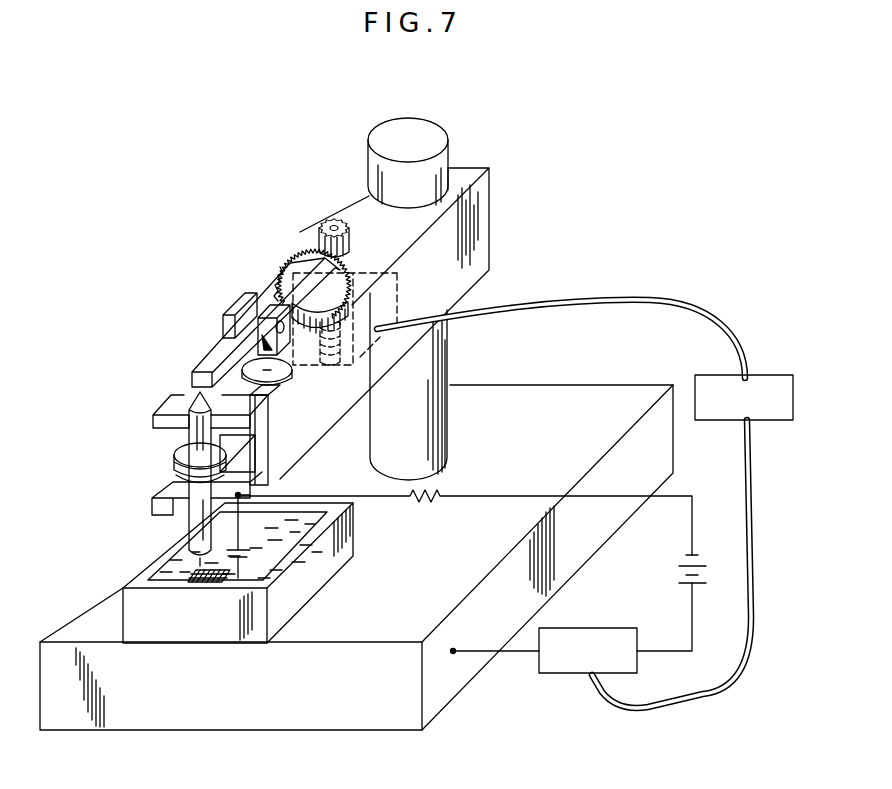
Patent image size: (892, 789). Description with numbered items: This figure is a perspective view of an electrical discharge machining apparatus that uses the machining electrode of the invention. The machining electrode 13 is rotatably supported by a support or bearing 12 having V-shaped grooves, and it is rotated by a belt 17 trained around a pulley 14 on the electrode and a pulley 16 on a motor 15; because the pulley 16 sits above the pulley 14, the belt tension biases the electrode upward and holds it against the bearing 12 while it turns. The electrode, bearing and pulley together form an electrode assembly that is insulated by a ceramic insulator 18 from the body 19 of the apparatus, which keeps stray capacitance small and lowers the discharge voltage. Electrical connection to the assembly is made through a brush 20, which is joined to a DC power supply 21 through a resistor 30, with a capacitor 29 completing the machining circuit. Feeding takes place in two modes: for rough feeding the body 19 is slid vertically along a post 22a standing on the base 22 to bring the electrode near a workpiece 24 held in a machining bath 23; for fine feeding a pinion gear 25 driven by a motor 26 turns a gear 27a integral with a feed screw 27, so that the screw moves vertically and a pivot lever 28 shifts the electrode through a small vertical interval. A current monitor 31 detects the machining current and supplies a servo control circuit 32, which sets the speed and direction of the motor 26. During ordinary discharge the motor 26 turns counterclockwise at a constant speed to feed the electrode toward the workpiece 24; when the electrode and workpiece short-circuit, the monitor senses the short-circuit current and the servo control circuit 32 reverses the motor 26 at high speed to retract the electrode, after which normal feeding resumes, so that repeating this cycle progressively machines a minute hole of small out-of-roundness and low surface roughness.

The bearing 12 is at (153, 420).
The machining electrode 13 is at (198, 444).
The pulley 14 is at (180, 462).
The motor 15 is at (284, 412).
The pulley 16 is at (288, 373).
The belt 17 is at (240, 458).
The insulator 18 is at (256, 446).
The body 19 is at (478, 222).
The brush 20 is at (256, 510).
The DC power supply 21 is at (680, 566).
The base 22 is at (573, 388).
The post 22a is at (428, 133).
The machining bath 23 is at (228, 652).
The workpiece 24 is at (200, 584).
The pinion gear 25 is at (328, 220).
The motor 26 is at (400, 311).
The feed screw 27 is at (332, 347).
The gear 27a is at (276, 270).
The pivot lever 28 is at (214, 380).
The capacitor 29 is at (250, 556).
The resistor 30 is at (426, 500).
The current monitor 31 is at (640, 640).
The servo control circuit 32 is at (700, 375).